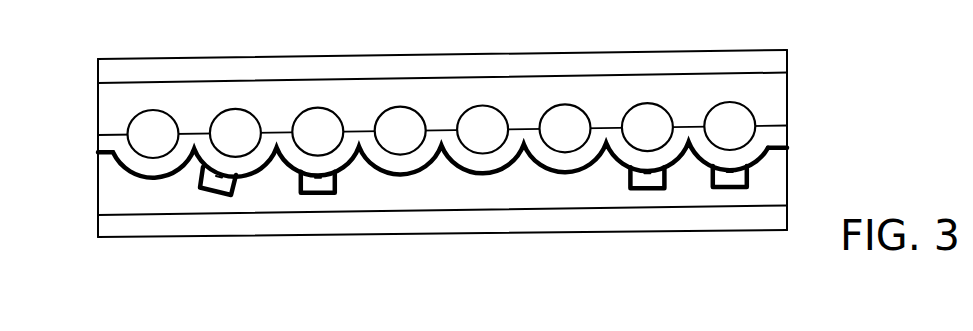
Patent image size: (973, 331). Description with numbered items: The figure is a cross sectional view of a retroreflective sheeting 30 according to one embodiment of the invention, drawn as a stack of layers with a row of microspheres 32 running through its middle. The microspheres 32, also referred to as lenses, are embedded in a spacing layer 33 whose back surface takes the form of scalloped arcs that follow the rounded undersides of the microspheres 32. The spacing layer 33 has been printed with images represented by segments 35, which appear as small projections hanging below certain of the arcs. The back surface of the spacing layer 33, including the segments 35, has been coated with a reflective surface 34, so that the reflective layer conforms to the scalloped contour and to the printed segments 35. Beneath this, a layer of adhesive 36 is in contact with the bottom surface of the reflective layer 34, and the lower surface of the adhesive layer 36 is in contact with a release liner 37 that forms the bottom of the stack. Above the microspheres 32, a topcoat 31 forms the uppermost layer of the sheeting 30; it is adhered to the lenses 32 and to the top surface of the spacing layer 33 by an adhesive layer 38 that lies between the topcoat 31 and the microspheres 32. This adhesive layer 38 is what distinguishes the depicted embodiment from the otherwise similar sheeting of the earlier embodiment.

The retroreflective sheeting 30 is at (740, 36).
The topcoat 31 is at (778, 62).
The adhesive layer 38 is at (773, 93).
The microspheres 32 is at (740, 120).
The spacing layer 33 is at (755, 145).
The reflective surface 34 is at (757, 163).
The segments 35 is at (735, 177).
The adhesive layer 36 is at (593, 188).
The release liner 37 is at (480, 222).